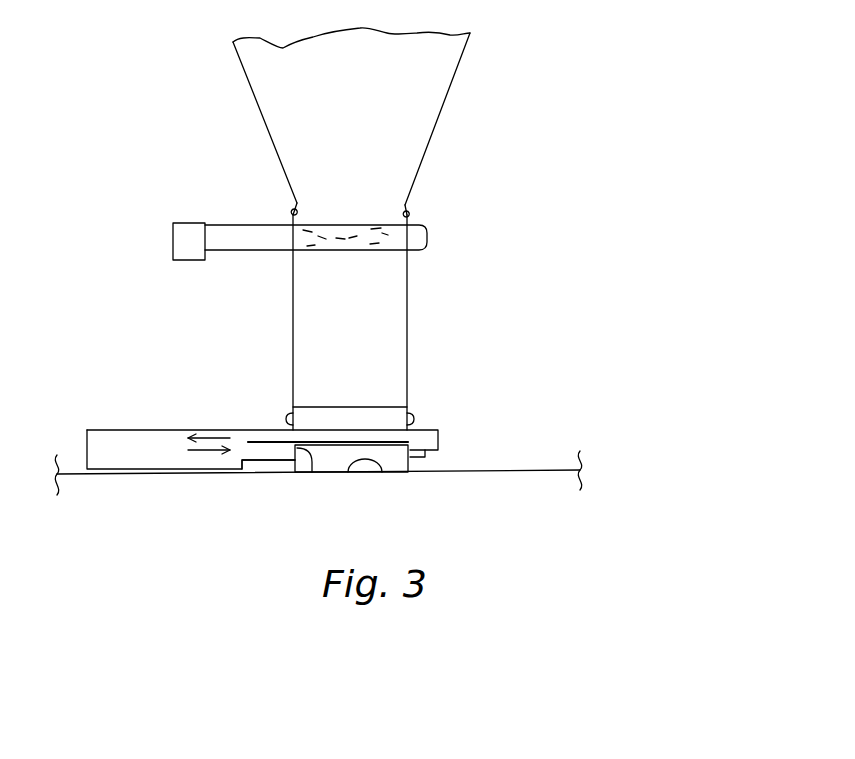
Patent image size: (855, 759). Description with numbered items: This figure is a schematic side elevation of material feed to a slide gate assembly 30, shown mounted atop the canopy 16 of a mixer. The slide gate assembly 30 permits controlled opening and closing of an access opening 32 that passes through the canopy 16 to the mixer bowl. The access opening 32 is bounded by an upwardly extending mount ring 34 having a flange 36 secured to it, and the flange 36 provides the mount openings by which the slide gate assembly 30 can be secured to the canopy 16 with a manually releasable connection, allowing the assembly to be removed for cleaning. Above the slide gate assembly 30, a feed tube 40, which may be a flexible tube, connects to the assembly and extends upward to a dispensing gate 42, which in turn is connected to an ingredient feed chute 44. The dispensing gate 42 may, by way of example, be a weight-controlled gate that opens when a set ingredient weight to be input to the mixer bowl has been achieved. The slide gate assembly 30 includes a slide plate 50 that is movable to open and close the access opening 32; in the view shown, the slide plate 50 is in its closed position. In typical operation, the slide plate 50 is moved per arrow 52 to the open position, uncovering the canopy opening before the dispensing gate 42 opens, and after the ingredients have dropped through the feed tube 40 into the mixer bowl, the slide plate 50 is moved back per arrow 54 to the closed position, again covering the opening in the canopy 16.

The canopy 16 is at (510, 470).
The slide gate assembly 30 is at (87, 428).
The access opening 32 is at (380, 472).
The mount ring 34 is at (310, 462).
The flange 36 is at (283, 460).
The feed tube 40 is at (410, 332).
The dispensing gate 42 is at (283, 247).
The ingredient feed chute 44 is at (430, 150).
The slide plate 50 is at (275, 442).
The arrow 52 is at (213, 437).
The arrow 54 is at (207, 452).